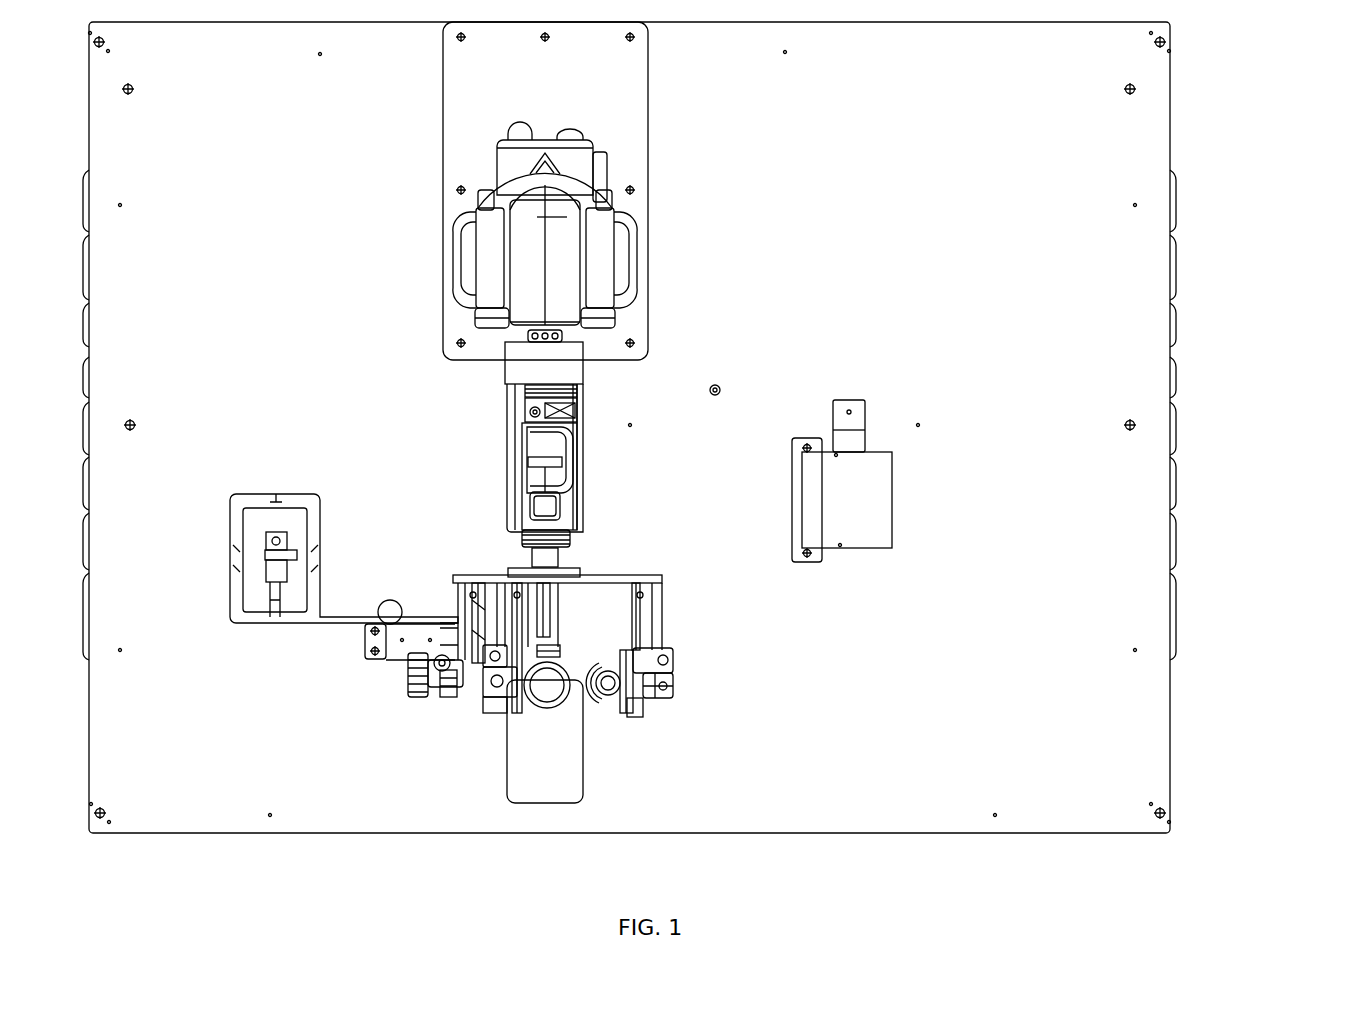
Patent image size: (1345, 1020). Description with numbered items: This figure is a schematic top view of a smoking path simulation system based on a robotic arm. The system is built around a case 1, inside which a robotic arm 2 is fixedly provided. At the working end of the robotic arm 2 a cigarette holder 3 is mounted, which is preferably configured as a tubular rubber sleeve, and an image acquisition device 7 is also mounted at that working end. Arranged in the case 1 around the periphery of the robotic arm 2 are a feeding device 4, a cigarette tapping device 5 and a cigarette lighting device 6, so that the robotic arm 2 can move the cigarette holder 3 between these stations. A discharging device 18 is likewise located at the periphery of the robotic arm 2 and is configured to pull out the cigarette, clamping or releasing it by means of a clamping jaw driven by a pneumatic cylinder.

The case 1 is at (1170, 177).
The robotic arm 2 is at (557, 378).
The cigarette holder 3 is at (545, 648).
The feeding device 4 is at (890, 485).
The cigarette tapping device 5 is at (412, 643).
The cigarette lighting device 6 is at (272, 556).
The image acquisition device 7 is at (468, 696).
The discharging device 18 is at (285, 540).